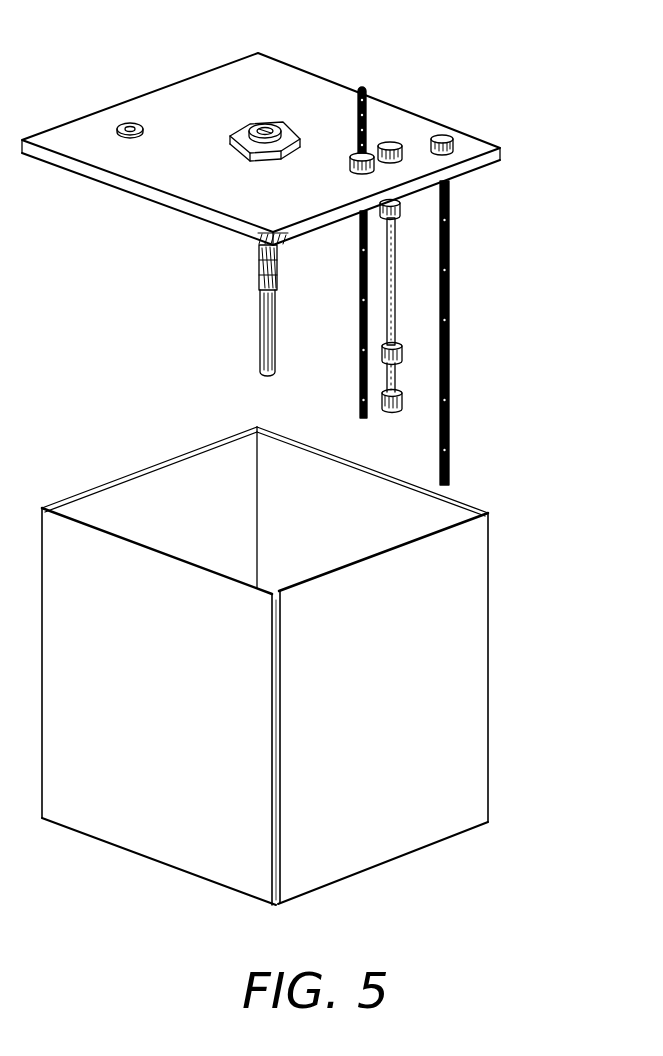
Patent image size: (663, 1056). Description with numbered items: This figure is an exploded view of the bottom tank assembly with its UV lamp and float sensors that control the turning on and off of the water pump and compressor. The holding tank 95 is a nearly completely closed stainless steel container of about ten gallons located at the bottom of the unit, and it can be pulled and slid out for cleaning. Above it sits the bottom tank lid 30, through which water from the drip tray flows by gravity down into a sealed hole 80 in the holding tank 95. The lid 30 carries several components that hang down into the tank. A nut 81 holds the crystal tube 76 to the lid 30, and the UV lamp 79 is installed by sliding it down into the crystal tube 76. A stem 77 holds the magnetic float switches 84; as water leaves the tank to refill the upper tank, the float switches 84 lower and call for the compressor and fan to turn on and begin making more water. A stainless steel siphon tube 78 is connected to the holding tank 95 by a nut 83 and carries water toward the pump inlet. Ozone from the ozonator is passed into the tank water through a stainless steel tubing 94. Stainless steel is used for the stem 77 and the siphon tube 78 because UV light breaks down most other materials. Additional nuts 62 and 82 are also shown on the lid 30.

The bottom tank lid 30 is at (282, 122).
The sealed hole 80 is at (126, 125).
The nut 81 is at (334, 84).
The stainless steel tubing 94 is at (373, 145).
The nut 62 is at (397, 141).
The nut 82 is at (450, 136).
The nut 83 is at (480, 140).
The UV lamp 79 is at (262, 278).
The crystal tube 76 is at (258, 330).
The stem 77 is at (388, 300).
The magnetic float switches 84 is at (383, 355).
The stainless steel siphon tube 78 is at (450, 348).
The holding tank 95 is at (477, 677).